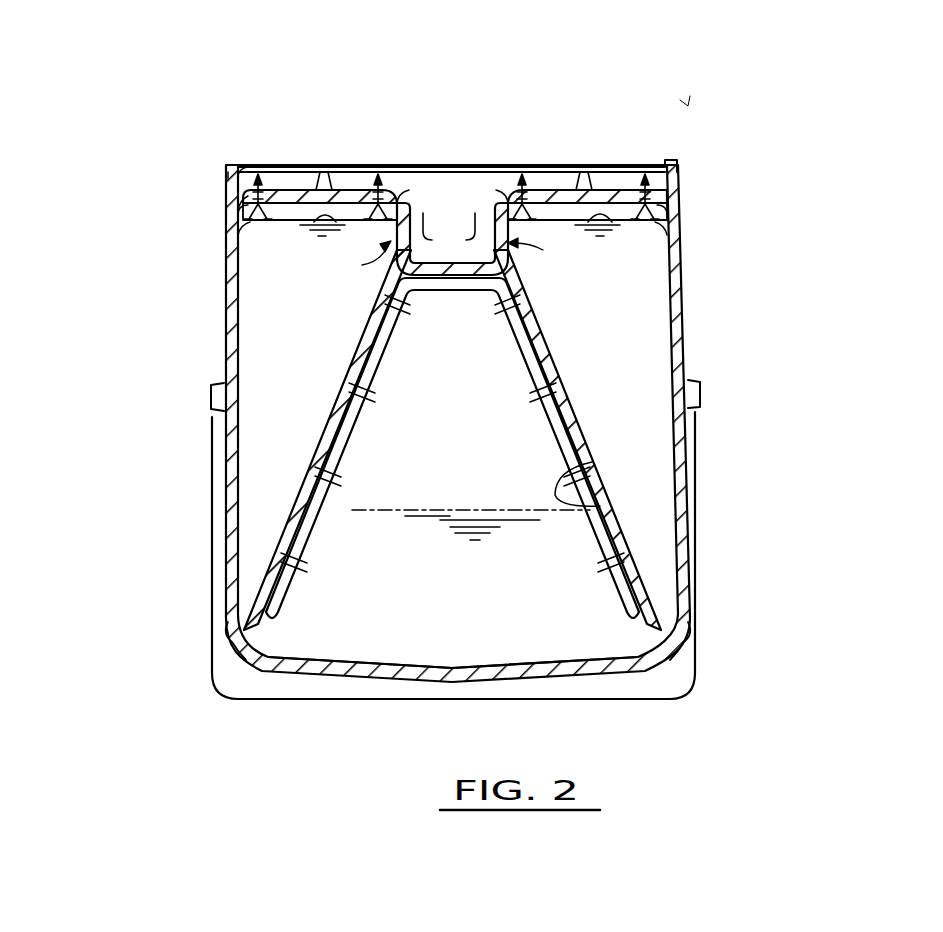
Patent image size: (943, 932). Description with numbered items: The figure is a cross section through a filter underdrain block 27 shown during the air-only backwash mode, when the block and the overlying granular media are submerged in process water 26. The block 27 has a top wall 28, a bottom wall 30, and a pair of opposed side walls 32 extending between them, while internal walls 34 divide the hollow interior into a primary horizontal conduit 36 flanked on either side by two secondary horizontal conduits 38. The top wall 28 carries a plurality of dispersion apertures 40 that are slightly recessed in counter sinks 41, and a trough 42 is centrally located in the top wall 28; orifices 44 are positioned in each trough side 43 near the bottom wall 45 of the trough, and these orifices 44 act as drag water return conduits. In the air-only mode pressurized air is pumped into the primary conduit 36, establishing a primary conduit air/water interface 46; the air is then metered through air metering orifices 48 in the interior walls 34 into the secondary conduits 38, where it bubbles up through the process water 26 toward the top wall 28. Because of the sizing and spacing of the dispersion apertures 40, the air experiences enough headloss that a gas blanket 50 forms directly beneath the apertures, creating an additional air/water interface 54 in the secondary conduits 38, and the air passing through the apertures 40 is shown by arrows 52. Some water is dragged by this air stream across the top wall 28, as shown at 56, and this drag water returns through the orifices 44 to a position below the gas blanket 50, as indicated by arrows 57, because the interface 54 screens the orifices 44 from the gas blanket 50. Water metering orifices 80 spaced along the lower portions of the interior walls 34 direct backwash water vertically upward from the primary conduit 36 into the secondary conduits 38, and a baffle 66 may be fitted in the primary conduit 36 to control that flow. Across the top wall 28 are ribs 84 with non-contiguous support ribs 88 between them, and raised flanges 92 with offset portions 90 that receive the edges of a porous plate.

The process water 26 is at (232, 358).
The block 27 is at (683, 108).
The top wall 28 is at (290, 190).
The bottom wall 30 is at (350, 672).
The side walls 32 is at (210, 392).
The internal walls 34 is at (330, 433).
The primary horizontal conduit 36 is at (429, 448).
The secondary horizontal conduits 38 is at (262, 398).
The dispersion apertures 40 is at (245, 218).
The counter sinks 41 is at (230, 212).
The trough 42 is at (432, 220).
The trough sides 43 is at (418, 190).
The orifices 44 is at (375, 280).
The bottom wall of the trough 45 is at (450, 280).
The primary conduit air/water interface 46 is at (368, 510).
The air metering orifices 48 is at (335, 470).
The gas blanket 50 is at (245, 252).
The arrows 52 is at (255, 183).
The air/water interface 54 is at (282, 328).
The drag water 56 is at (358, 190).
The arrows 57 is at (458, 257).
The baffle 66 is at (600, 506).
The water metering orifices 80 is at (228, 598).
The ribs 84 is at (503, 177).
The support ribs 88 is at (590, 167).
The offset portions 90 is at (244, 165).
The raised flanges 92 is at (228, 170).